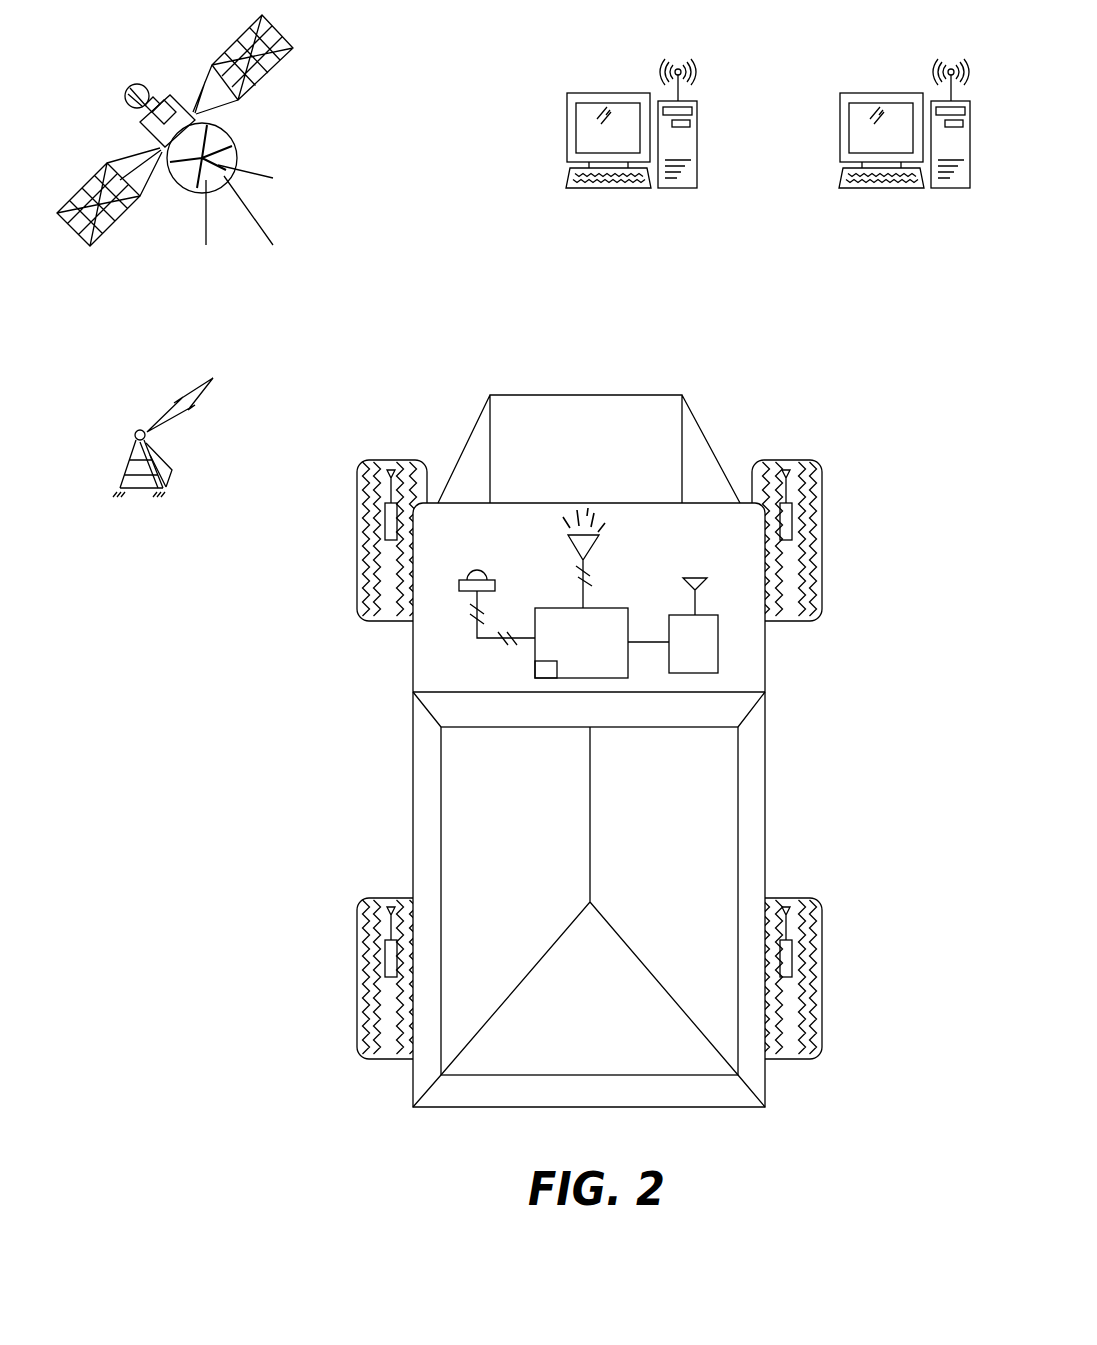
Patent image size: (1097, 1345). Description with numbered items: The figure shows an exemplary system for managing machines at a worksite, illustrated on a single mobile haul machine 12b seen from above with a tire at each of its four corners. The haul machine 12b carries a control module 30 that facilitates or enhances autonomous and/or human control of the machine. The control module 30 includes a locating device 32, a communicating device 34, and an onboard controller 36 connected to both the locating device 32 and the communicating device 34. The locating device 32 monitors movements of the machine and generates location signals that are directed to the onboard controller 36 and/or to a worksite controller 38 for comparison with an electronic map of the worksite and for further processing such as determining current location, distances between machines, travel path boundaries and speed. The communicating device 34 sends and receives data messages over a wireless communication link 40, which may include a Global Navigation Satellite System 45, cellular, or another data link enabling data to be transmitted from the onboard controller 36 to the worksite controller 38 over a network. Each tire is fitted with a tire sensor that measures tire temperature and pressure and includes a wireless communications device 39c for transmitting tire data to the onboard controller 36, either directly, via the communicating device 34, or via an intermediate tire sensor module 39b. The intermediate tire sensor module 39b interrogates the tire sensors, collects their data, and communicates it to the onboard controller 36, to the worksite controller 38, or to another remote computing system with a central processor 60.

The haul machine 12b is at (611, 707).
The control module 30 is at (571, 593).
The locating device 32 is at (467, 576).
The communicating device 34 is at (568, 547).
The onboard controller 36 is at (581, 643).
The worksite controller 38 is at (576, 84).
The intermediate tire sensor module 39b is at (693, 625).
The wireless communications device 39c is at (795, 474).
The wireless communication link 40 is at (136, 437).
The Global Navigation Satellite System 45 is at (290, 127).
The central processor 60 is at (861, 84).